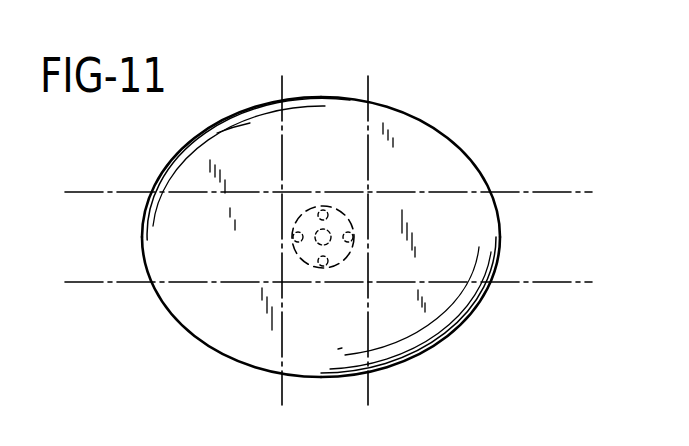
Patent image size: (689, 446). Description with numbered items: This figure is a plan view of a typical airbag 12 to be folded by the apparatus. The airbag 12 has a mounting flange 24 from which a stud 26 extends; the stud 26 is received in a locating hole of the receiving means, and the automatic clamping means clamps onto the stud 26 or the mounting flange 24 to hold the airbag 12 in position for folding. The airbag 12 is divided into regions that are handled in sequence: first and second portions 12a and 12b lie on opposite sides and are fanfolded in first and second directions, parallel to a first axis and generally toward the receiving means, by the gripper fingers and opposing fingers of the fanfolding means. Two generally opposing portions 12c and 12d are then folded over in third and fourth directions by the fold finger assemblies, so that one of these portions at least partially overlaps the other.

The airbag 12 is at (325, 231).
The first portion of the airbag 12a is at (322, 333).
The second portion of the airbag 12b is at (323, 137).
The opposing portion of the airbag 12c is at (452, 240).
The opposing portion of the airbag 12d is at (192, 243).
The airbag mounting flange 24 is at (302, 260).
The stud 26 is at (323, 210).